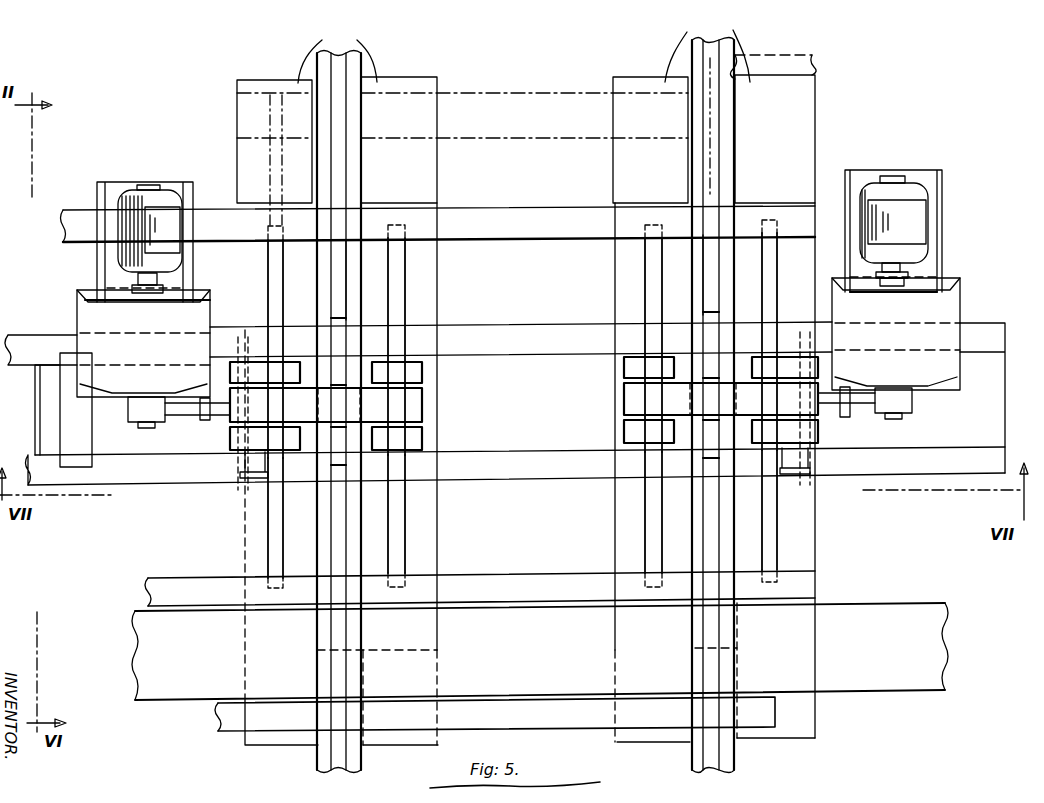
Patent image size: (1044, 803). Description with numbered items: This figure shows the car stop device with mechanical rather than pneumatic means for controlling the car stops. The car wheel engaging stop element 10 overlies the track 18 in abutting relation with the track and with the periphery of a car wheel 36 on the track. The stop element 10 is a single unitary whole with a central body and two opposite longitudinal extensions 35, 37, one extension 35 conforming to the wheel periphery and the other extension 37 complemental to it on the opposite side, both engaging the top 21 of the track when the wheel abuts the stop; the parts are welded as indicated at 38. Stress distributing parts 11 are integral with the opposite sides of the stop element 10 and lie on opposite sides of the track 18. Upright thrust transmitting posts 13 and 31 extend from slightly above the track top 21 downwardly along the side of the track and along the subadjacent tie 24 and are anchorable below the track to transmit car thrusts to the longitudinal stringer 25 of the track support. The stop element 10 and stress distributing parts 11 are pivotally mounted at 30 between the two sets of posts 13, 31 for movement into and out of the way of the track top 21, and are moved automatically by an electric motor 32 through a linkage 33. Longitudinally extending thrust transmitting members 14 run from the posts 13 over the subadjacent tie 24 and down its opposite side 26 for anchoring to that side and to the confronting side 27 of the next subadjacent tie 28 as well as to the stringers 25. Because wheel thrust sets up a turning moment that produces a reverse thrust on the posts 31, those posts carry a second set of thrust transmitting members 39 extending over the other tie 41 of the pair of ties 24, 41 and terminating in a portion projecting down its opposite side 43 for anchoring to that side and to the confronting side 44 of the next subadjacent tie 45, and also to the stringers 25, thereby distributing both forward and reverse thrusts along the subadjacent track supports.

The car wheel engaging stop element 10 is at (522, 405).
The stress distributing parts 11 is at (524, 411).
The upright thrust transmitting posts 13 is at (524, 435).
The longitudinally extending thrust transmitting members 14 is at (268, 515).
The track 18 is at (697, 150).
The top of the track 21 is at (345, 178).
The subadjacent tie 24 is at (497, 441).
The longitudinal stringer 25 is at (524, 48).
The opposite side of the tie 26 is at (497, 481).
The confronting side of the next subadjacent tie 27 is at (572, 575).
The next subadjacent tie 28 is at (473, 590).
The pivotal mounting 30 is at (247, 462).
The posts 31 is at (524, 370).
The electric motor 32 is at (120, 248).
The linkage 33 is at (185, 408).
The longitudinal extension 35 is at (340, 340).
The car wheel 36 is at (340, 262).
The longitudinal extension 37 is at (346, 458).
The welds 38 is at (918, 222).
The longitudinally extending thrust transmitting members 39 is at (283, 300).
The other tie 41 is at (478, 358).
The opposite side of the other tie 43 is at (568, 327).
The confronting side of the next subadjacent tie 44 is at (565, 243).
The next subadjacent tie 45 is at (521, 242).